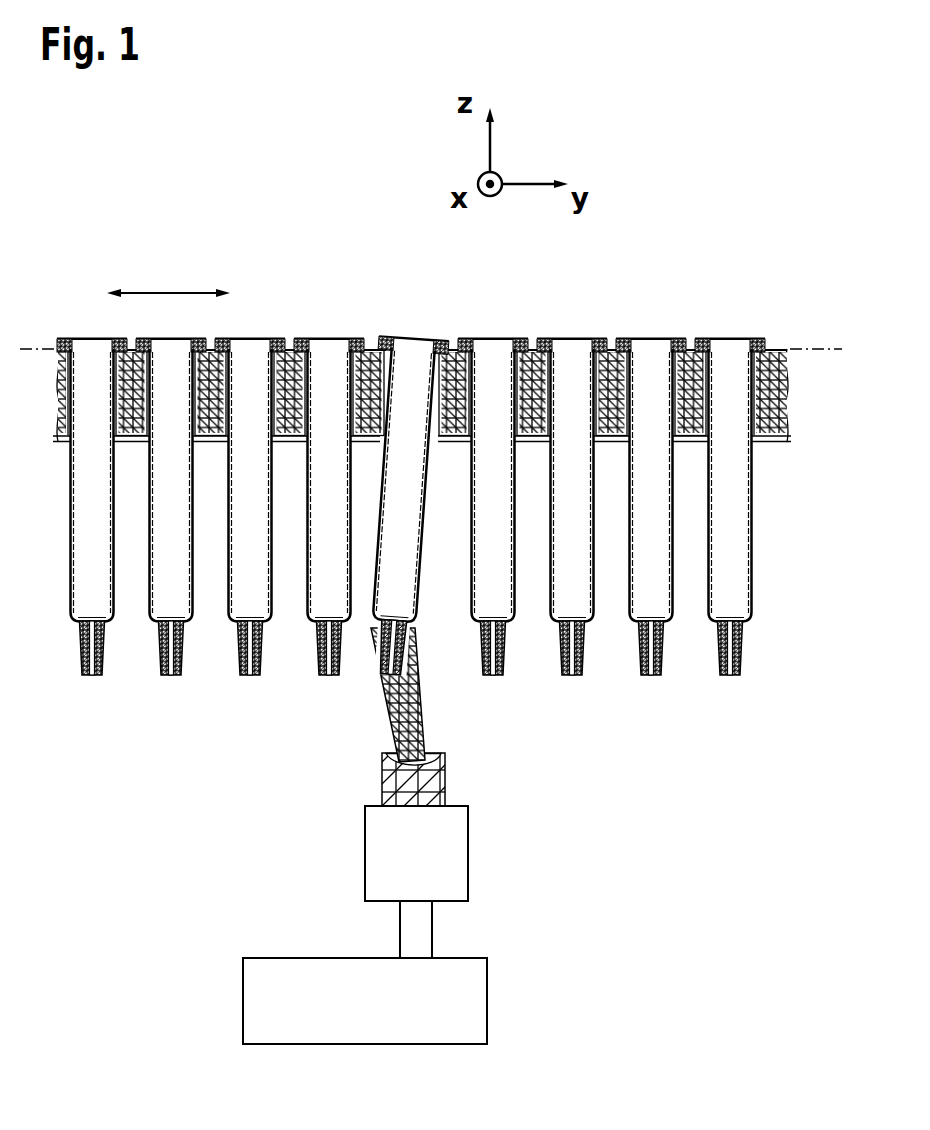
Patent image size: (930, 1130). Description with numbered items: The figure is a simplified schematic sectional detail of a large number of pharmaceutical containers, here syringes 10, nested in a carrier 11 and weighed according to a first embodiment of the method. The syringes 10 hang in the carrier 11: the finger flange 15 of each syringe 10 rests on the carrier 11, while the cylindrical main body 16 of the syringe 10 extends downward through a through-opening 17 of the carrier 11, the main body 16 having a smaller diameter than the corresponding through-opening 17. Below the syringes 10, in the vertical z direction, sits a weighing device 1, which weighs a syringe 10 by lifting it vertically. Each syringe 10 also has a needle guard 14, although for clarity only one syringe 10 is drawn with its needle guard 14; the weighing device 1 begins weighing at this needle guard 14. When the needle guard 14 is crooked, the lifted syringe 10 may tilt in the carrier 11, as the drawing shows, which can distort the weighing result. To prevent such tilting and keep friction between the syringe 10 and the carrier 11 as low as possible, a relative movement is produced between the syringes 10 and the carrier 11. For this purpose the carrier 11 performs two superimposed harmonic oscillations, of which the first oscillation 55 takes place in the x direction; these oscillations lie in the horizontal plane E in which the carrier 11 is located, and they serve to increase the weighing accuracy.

The weighing device 1 is at (484, 852).
The syringe 10 is at (415, 510).
The carrier 11 is at (613, 382).
The needle guard 14 is at (398, 715).
The finger flange 15 is at (391, 345).
The cylindrical main body 16 is at (398, 603).
The through-opening 17 is at (396, 343).
The first oscillation 55 is at (167, 292).
The horizontal plane E is at (805, 349).